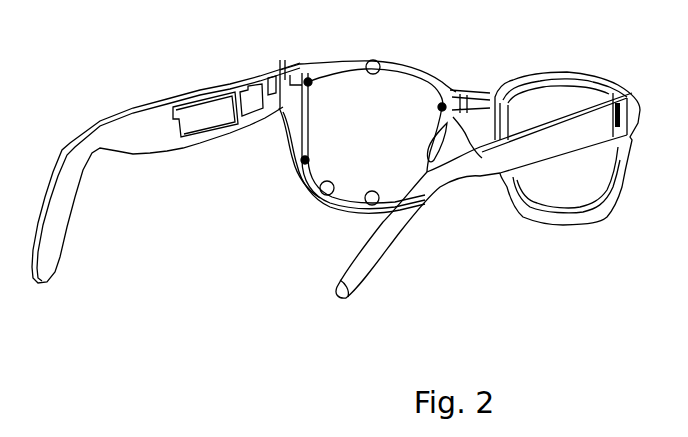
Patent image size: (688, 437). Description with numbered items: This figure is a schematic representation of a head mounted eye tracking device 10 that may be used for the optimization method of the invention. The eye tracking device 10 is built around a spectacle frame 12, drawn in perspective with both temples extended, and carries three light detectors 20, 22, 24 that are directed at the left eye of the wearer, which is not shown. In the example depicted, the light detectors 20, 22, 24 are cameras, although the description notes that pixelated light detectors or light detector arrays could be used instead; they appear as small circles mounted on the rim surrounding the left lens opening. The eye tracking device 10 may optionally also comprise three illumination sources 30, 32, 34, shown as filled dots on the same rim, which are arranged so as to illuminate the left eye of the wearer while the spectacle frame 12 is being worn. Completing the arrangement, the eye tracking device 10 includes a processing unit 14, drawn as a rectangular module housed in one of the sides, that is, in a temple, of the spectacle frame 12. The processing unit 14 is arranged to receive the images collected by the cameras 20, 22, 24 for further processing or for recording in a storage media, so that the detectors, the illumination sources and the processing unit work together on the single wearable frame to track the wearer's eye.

The eye tracking device 10 is at (490, 79).
The spectacle frame 12 is at (580, 78).
The processing unit 14 is at (212, 113).
The light detector 20 is at (320, 194).
The light detector 22 is at (370, 191).
The light detector 24 is at (374, 60).
The illumination source 30 is at (302, 161).
The illumination source 32 is at (308, 78).
The illumination source 34 is at (443, 103).